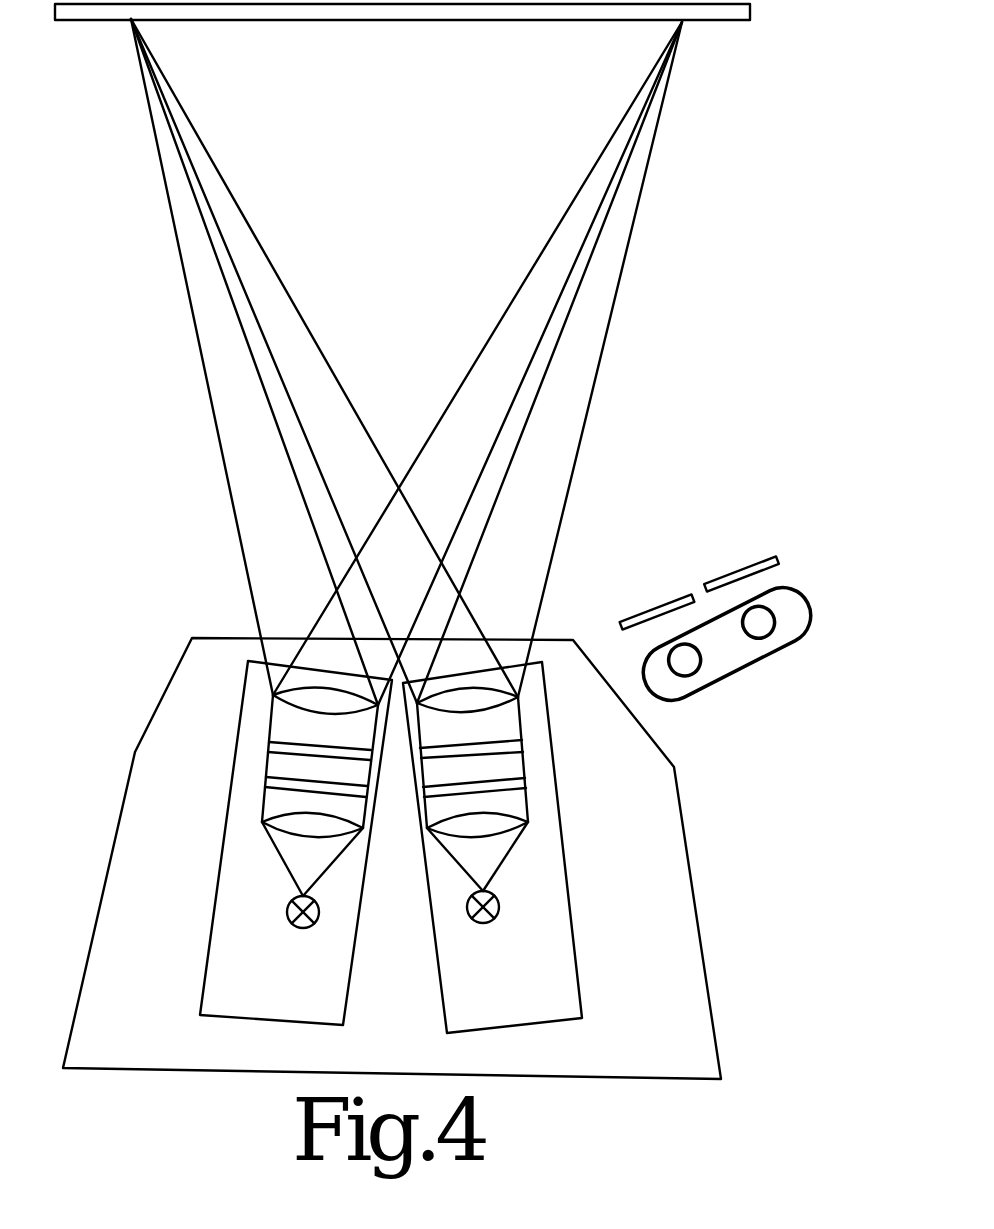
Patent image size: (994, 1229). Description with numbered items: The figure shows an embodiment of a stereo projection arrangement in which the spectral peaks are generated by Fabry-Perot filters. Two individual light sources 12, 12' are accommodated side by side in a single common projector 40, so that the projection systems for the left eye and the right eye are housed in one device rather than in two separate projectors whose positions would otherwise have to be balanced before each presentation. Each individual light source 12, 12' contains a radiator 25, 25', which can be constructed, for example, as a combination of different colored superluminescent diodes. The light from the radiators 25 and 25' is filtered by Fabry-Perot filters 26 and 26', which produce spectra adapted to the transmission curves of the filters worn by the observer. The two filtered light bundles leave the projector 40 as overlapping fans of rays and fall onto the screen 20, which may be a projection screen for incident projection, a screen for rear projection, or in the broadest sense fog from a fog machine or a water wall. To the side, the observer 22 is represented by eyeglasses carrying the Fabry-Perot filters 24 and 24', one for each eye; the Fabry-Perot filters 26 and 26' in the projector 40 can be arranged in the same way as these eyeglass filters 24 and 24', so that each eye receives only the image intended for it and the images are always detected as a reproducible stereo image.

The screen 20 is at (732, 14).
The projector 40 is at (188, 676).
The individual light source 12 is at (240, 855).
The individual light source 12' is at (540, 864).
The Fabry-Perot filter 26 is at (256, 762).
The Fabry-Perot filter 26' is at (550, 762).
The radiator 25 is at (310, 912).
The radiator 25' is at (484, 918).
The observer 22 is at (797, 640).
The Fabry-Perot filter 24 is at (648, 579).
The Fabry-Perot filter 24' is at (795, 536).